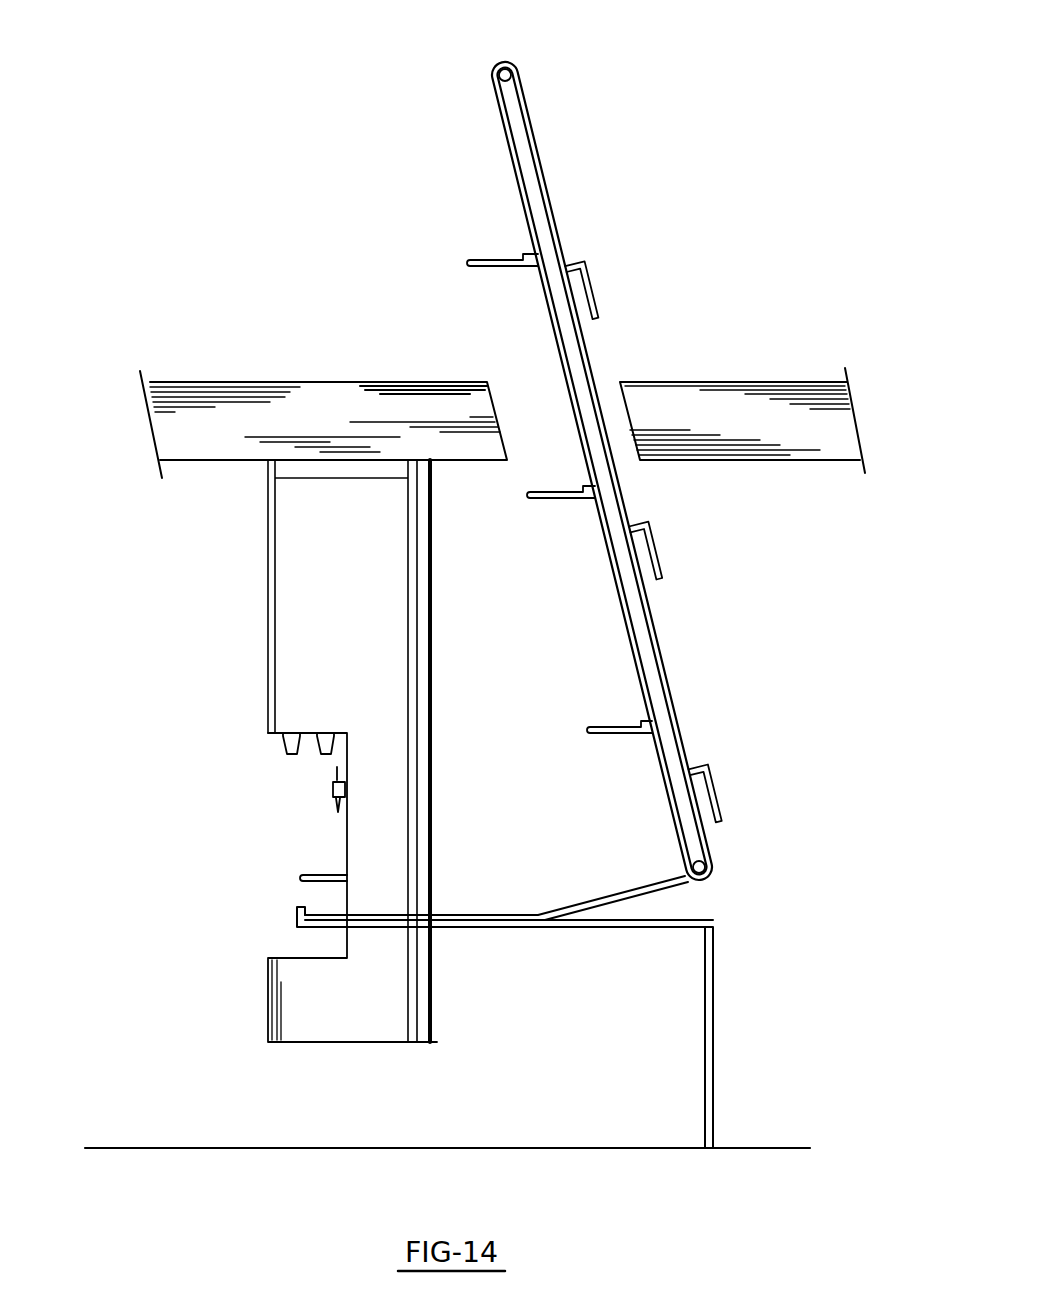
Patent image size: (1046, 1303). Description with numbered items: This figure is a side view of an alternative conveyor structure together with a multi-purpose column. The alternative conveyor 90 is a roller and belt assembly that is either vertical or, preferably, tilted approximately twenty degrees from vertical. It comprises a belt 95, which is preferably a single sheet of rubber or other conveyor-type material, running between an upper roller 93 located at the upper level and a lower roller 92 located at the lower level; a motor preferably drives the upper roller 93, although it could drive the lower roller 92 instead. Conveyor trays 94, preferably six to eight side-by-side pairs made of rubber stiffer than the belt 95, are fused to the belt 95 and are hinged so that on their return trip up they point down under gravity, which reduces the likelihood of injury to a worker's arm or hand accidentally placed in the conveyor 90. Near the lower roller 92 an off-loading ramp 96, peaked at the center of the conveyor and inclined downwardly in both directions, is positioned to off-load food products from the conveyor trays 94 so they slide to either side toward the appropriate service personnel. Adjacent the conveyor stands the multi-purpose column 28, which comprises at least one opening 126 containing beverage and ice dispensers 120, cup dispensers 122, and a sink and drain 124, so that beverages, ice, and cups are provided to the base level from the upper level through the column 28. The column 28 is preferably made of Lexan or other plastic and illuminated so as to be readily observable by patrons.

The multi-purpose column 28 is at (302, 616).
The alternative conveyor 90 is at (621, 469).
The lower roller 92 is at (707, 868).
The upper roller 93 is at (515, 71).
The conveyor trays 94 is at (490, 262).
The belt 95 is at (556, 230).
The off-loading ramp 96 is at (600, 892).
The beverage and ice dispensers 120 is at (334, 792).
The cup dispensers 122 is at (325, 742).
The sink and drain 124 is at (305, 882).
The opening 126 is at (213, 848).